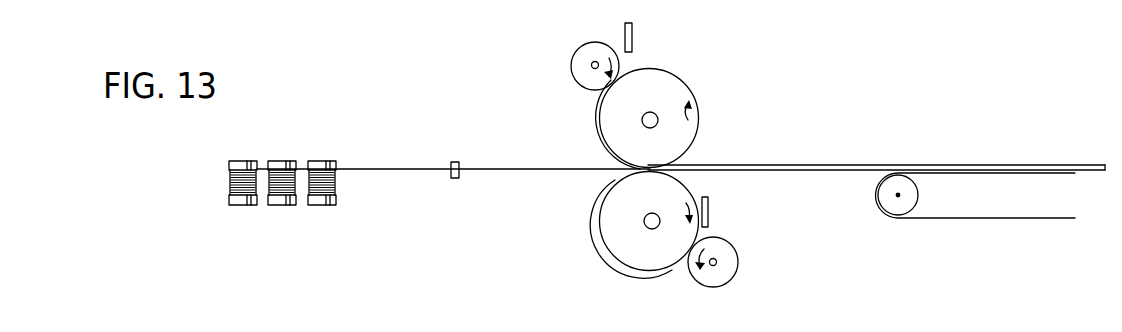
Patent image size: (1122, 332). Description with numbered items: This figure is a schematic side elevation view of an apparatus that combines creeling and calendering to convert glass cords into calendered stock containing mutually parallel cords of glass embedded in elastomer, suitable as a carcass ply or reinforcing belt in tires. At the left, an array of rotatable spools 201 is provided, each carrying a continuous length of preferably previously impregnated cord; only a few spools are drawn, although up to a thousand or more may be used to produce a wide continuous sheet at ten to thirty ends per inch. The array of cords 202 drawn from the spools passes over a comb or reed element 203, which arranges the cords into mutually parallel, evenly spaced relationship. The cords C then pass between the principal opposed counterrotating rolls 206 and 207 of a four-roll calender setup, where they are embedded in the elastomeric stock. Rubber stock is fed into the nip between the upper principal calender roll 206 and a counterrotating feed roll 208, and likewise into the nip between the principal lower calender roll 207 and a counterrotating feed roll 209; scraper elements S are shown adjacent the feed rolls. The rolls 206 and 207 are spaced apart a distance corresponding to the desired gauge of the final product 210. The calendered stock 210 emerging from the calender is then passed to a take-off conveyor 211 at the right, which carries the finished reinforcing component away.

The rotatable spools 201 is at (233, 207).
The array of cords 202 is at (380, 170).
The guide 203 is at (456, 162).
The cords C is at (577, 170).
The principal calender roll 206 is at (657, 90).
The principal lower calender roll 207 is at (642, 253).
The feed roll 208 is at (579, 57).
The feed roll 209 is at (725, 270).
The scraper blade S is at (632, 33).
The calendered stock 210 is at (830, 170).
The take-off conveyor 211 is at (923, 218).